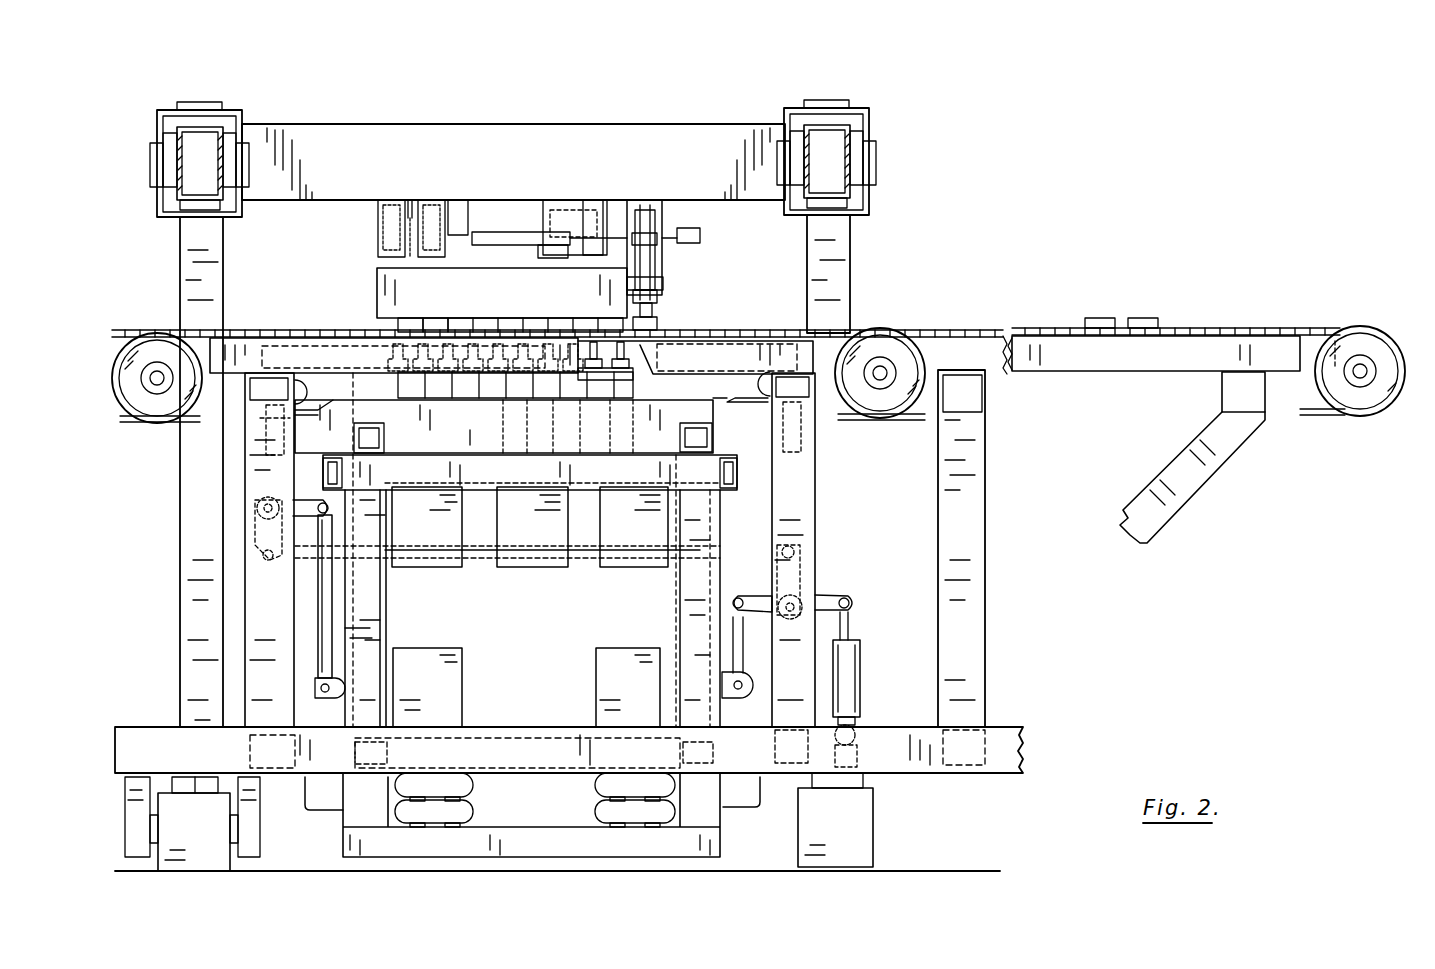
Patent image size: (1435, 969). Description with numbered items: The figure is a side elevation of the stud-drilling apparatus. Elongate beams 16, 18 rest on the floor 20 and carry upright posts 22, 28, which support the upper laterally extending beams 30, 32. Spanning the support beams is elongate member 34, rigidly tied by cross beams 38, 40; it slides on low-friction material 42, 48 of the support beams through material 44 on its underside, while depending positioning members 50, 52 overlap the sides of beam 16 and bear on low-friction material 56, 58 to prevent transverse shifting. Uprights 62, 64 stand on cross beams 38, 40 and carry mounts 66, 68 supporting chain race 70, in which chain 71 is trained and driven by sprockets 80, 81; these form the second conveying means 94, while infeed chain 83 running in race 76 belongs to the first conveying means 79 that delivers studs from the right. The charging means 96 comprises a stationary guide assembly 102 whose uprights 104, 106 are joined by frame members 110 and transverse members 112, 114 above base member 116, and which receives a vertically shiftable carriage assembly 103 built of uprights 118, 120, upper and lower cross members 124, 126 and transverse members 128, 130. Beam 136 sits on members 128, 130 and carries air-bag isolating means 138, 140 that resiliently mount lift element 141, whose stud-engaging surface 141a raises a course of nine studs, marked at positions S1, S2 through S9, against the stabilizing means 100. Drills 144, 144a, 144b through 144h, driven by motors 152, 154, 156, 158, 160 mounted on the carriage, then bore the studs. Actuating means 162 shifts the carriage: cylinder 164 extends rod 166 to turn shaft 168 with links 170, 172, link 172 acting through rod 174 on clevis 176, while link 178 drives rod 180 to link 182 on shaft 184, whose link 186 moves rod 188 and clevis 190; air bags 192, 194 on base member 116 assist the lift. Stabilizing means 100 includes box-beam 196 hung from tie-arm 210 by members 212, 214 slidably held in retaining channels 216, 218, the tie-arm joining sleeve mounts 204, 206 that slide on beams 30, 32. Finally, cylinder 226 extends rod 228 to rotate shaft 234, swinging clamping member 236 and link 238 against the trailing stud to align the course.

The elongate beam 16 is at (206, 855).
The elongate beam 18 is at (873, 826).
The floor 20 is at (925, 870).
The upright post 22 is at (190, 265).
The upright post 28 is at (843, 250).
The laterally extending beam 30 is at (170, 137).
The beam 32 is at (860, 118).
The elongate member 34 is at (155, 738).
The cross beam 38 is at (300, 764).
The cross beam 40 is at (765, 765).
The low-friction material 42 is at (198, 786).
The low-friction material 44 is at (182, 784).
The low-friction material 48 is at (853, 783).
The positioning member 50 is at (120, 855).
The positioning member 52 is at (258, 845).
The low-friction material 56 is at (161, 827).
The low-friction material 58 is at (230, 834).
The upright 62 is at (245, 460).
The upright 64 is at (838, 495).
The mount 66 is at (245, 403).
The mount 68 is at (835, 404).
The chain race 70 is at (240, 353).
The conveying chain 71 is at (158, 346).
The infeed chain race 76 is at (1318, 334).
The first conveying means 79 is at (1170, 290).
The drive sprocket 80 is at (875, 415).
The sprocket 81 is at (134, 410).
The infeed conveying chain 83 is at (1233, 329).
The second conveying means 94 is at (751, 284).
The charging means 96 is at (349, 596).
The stabilizing means 100 is at (352, 256).
The guide assembly 102 is at (668, 615).
The carriage assembly 103 is at (518, 432).
The upright 104 is at (386, 655).
The upright 106 is at (685, 648).
The frame member 110 is at (467, 480).
The frame member 112 is at (325, 465).
The frame member 114 is at (737, 476).
The base frame member 116 is at (510, 841).
The upright 118 is at (388, 598).
The upright 120 is at (680, 598).
The upper cross member 124 is at (651, 445).
The lower cross member 126 is at (525, 745).
The transversely extending member 128 is at (372, 424).
The transversely extending member 130 is at (708, 431).
The beam 136 is at (372, 395).
The isolating means 138 is at (303, 378).
The isolating means 140 is at (757, 393).
The lift element 141 is at (650, 343).
The stud-engaging surface 141a is at (650, 330).
The drill 144 is at (390, 350).
The drill 144a is at (445, 345).
The drill 144b is at (495, 343).
The finger 144h is at (656, 355).
The motor 152 is at (460, 670).
The motor 154 is at (470, 542).
The motor 156 is at (535, 567).
The motor 158 is at (643, 565).
The motor 160 is at (595, 670).
The actuating means 162 is at (868, 646).
The fluid actuated cylinder 164 is at (850, 670).
The extendible retractable rod 166 is at (848, 619).
The shaft 168 is at (788, 617).
The link 170 is at (841, 593).
The link 172 is at (745, 590).
The rod 174 is at (745, 663).
The clevis 176 is at (734, 696).
The link 178 is at (798, 560).
The rod 180 is at (470, 558).
The link 182 is at (258, 547).
The shaft 184 is at (255, 510).
The link 186 is at (305, 501).
The rod 188 is at (315, 617).
The clevis 190 is at (315, 685).
The air bag 192 is at (480, 790).
The air bag 194 is at (597, 800).
The box-beam 196 is at (430, 295).
The sleeve mount 204 is at (223, 112).
The sleeve mount 206 is at (847, 111).
The tie-arm 210 is at (500, 125).
The member 212 is at (405, 200).
The member 214 is at (575, 200).
The retaining channel 216 is at (383, 200).
The retaining channel 218 is at (428, 200).
The fluid-actuated cylinder 226 is at (483, 237).
The extendible-retractable rod 228 is at (622, 212).
The rotatable shaft 234 is at (658, 238).
The clamping member 236 is at (640, 305).
The link 238 is at (702, 233).
The station 1 S1 is at (410, 318).
The station 2 S2 is at (444, 318).
The station 9 S9 is at (610, 317).